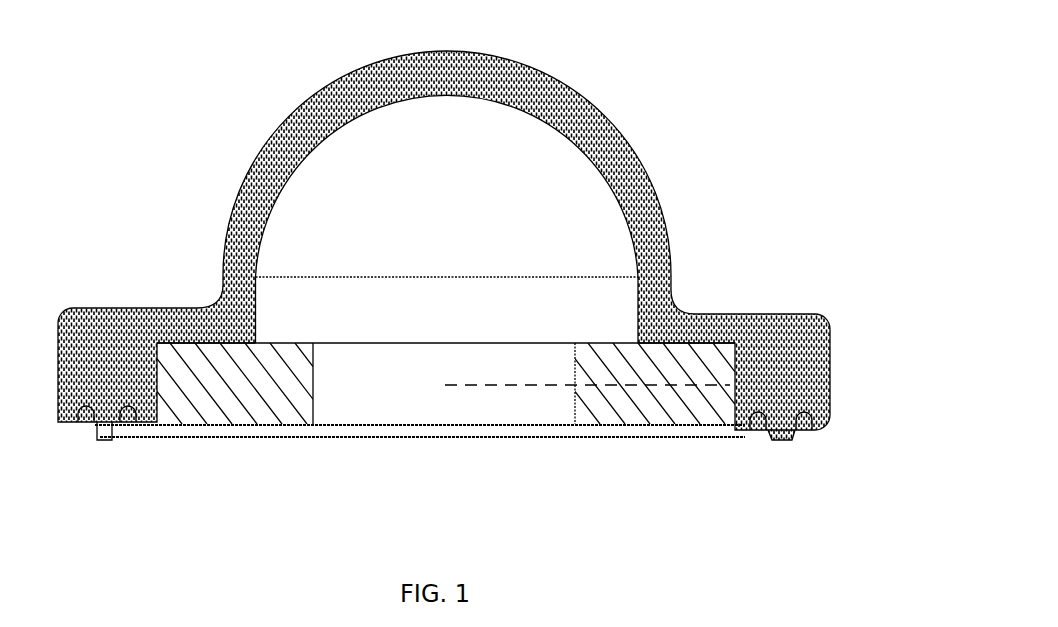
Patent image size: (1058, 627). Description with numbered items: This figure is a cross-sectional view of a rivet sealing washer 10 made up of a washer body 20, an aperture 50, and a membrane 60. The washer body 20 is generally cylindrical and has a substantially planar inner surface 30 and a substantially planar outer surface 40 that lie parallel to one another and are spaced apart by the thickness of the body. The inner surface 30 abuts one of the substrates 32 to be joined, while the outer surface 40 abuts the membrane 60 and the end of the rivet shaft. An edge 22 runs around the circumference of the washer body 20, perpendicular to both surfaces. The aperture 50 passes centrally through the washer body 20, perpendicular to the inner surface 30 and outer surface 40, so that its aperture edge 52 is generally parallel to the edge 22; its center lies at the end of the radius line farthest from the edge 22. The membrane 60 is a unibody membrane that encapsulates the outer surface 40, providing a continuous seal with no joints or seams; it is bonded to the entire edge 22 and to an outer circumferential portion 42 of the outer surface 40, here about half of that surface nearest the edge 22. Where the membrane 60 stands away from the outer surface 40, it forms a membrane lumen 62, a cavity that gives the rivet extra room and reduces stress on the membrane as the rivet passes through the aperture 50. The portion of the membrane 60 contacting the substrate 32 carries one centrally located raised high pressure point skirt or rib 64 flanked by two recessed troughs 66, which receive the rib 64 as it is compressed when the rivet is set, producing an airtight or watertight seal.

The rivet sealing washer 10 is at (493, 271).
The washer body 20 is at (690, 378).
The edge 22 is at (745, 412).
The inner surface 30 is at (290, 430).
The substrate 32 is at (406, 434).
The outer surface 40 is at (278, 335).
The outer circumferential portion 42 is at (185, 306).
The aperture 50 is at (422, 385).
The aperture edge 52 is at (590, 362).
The membrane 60 is at (540, 78).
The membrane lumen 62 is at (313, 187).
The raised high pressure point skirt or rib 64 is at (100, 430).
The recessed trough 66 is at (800, 410).